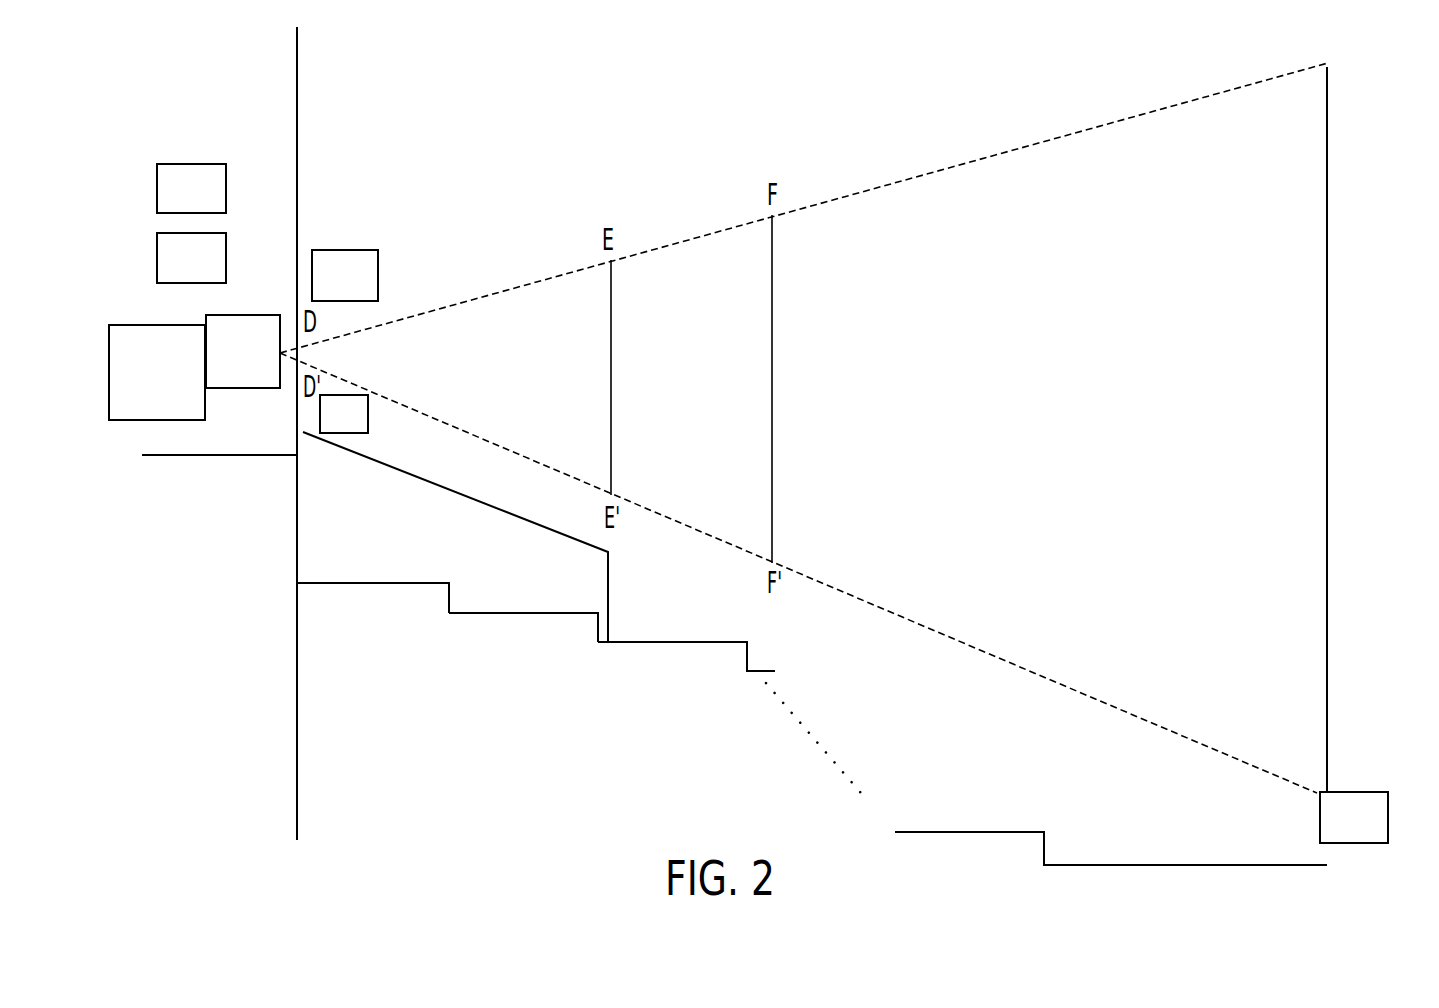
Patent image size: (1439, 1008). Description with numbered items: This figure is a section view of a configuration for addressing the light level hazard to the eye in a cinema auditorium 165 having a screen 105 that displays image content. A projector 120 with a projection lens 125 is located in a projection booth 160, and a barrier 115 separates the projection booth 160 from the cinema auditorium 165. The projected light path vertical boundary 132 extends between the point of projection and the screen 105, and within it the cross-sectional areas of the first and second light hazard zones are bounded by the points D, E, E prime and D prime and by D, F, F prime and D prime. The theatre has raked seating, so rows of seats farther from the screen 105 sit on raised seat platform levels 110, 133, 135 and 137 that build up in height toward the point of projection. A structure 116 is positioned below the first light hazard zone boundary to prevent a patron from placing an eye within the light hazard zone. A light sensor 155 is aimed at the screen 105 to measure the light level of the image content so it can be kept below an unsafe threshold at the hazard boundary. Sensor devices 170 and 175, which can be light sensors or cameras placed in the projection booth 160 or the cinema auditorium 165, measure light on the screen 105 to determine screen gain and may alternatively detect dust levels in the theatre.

The screen 105 is at (1352, 245).
The seat platform level 110 is at (1098, 865).
The barrier 115 is at (320, 129).
The structure 116 is at (612, 553).
The projector 120 is at (172, 388).
The projection lens 125 is at (258, 367).
The projected light path vertical boundary 132 is at (1070, 135).
The seat platform level 133 is at (352, 583).
The seat platform level 135 is at (500, 612).
The seat platform level 137 is at (658, 642).
The light sensor 155 is at (360, 431).
The projection booth 160 is at (206, 274).
The cinema auditorium 165 is at (1370, 834).
The sensor device 170 is at (206, 205).
The sensor device 175 is at (360, 292).